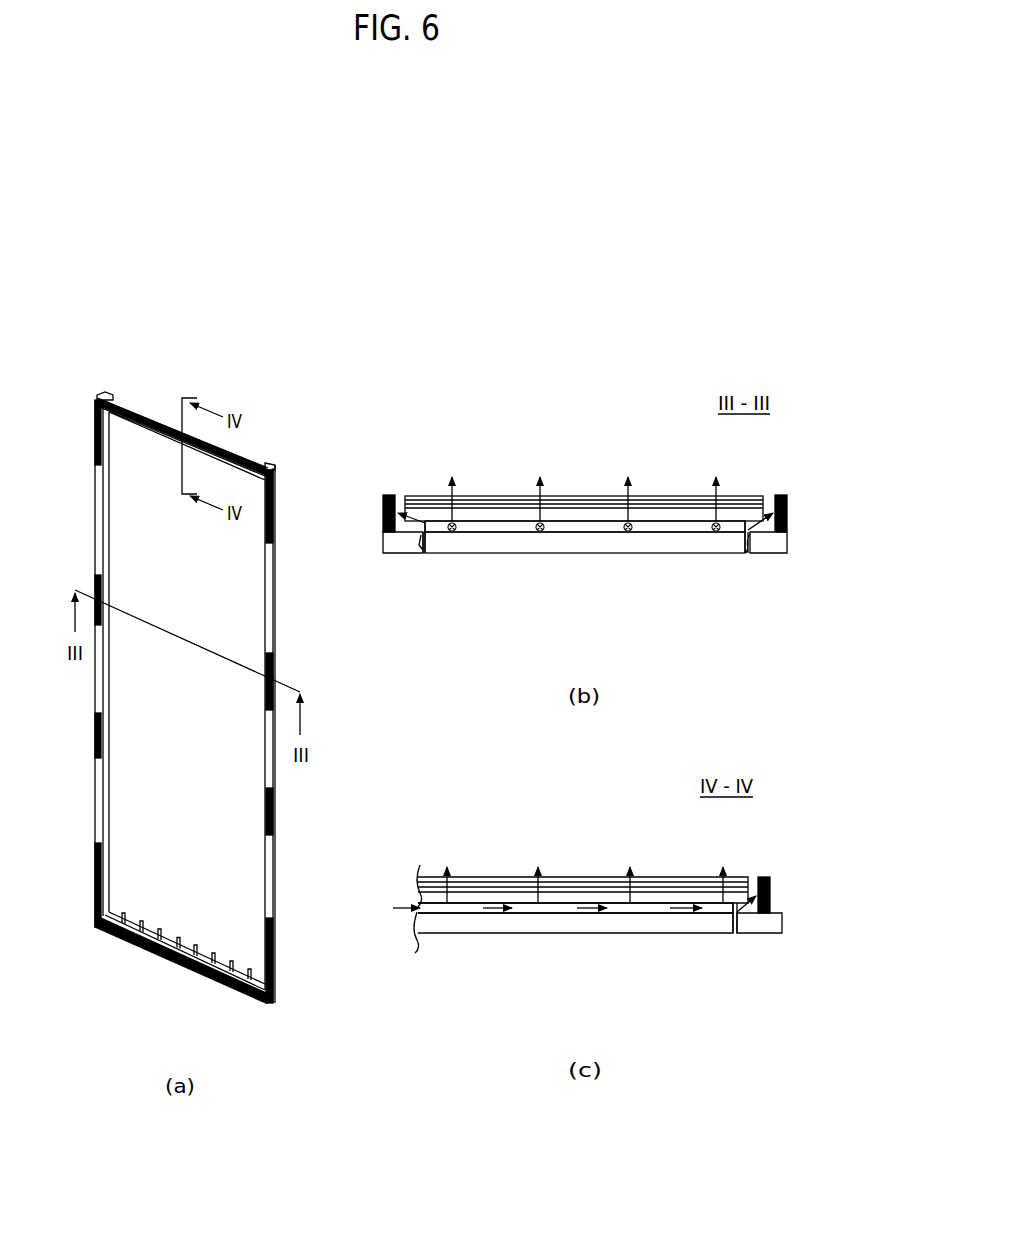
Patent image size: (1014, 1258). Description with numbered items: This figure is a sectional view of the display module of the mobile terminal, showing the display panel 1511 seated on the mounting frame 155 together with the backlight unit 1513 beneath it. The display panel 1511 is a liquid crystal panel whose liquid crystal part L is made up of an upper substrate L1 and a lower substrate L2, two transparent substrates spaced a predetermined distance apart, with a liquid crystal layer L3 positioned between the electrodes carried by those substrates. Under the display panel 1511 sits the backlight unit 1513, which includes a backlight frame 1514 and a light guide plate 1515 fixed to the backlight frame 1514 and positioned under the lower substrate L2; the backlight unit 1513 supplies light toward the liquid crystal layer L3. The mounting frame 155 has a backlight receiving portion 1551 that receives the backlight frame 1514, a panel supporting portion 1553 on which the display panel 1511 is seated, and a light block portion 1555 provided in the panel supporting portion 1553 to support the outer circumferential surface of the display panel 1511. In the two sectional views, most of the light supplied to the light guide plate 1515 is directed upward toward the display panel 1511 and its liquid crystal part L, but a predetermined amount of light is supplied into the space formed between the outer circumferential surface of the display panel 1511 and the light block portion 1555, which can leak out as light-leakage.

The mounting frame 155 is at (777, 547).
The backlight receiving portion 1551 is at (420, 553).
The panel supporting portion 1553 is at (750, 535).
The light block portion 1555 is at (788, 501).
The display panel 1511 is at (672, 495).
The backlight unit 1513 is at (610, 618).
The backlight frame 1514 is at (533, 543).
The light guide plate 1515 is at (608, 526).
The liquid crystal part L is at (613, 425).
The upper substrate L1 is at (565, 497).
The lower substrate L2 is at (513, 515).
The liquid crystal layer L3 is at (608, 505).